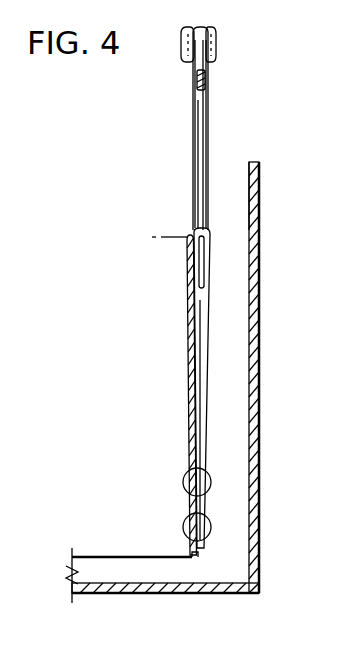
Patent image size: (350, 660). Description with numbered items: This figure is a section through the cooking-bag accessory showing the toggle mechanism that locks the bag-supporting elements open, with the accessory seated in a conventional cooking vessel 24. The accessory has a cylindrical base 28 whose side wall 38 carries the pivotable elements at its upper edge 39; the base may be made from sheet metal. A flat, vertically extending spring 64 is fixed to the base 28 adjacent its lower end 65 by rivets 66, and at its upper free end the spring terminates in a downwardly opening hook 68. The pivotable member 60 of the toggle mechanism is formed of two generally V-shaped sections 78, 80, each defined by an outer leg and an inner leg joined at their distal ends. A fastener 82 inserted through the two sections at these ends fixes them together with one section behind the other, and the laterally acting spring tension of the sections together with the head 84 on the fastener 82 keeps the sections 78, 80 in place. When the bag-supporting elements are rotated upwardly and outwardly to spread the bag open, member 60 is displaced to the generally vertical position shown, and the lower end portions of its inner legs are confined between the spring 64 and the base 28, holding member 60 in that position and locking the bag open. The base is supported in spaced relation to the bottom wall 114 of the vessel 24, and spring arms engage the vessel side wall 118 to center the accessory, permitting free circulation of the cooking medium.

The cooking vessel 24 is at (262, 518).
The vessel side wall 118 is at (259, 195).
The bottom wall 114 is at (262, 595).
The lower end 65 is at (158, 560).
The side wall 38 is at (192, 322).
The upper edge 39 is at (188, 234).
The spring 64 is at (212, 150).
The V-shaped section 80 is at (191, 80).
The V-shaped section 78 is at (209, 98).
The pivotable member 60 is at (195, 157).
The base 28 is at (206, 380).
The hook 68 is at (200, 232).
The fastener 82 is at (220, 46).
The head 84 is at (218, 52).
The rivets 66 is at (184, 481).